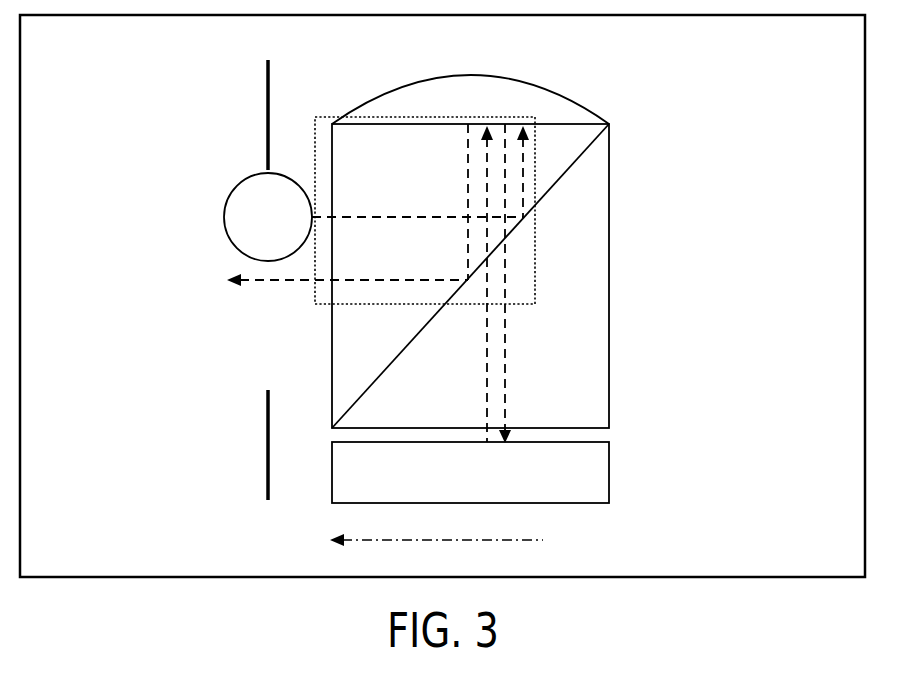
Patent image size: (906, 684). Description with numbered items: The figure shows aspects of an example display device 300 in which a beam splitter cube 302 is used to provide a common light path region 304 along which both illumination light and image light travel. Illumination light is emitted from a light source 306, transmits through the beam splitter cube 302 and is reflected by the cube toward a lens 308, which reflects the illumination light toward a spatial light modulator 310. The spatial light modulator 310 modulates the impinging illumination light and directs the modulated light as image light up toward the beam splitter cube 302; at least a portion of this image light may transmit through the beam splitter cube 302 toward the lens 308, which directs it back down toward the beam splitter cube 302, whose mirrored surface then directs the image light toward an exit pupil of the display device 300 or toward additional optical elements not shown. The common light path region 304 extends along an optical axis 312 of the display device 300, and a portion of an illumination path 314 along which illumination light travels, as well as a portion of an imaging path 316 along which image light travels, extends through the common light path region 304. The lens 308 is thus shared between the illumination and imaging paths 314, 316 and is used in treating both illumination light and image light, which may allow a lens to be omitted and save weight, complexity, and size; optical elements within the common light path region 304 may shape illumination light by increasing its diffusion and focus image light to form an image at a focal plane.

The display device 300 is at (487, 309).
The beam splitter cube 302 is at (331, 371).
The common light path region 304 is at (322, 116).
The light source 306 is at (284, 227).
The lens 308 is at (563, 93).
The spatial light modulator 310 is at (488, 484).
The optical axis 312 is at (547, 541).
The illumination path 314 is at (524, 157).
The imaging path 316 is at (485, 150).